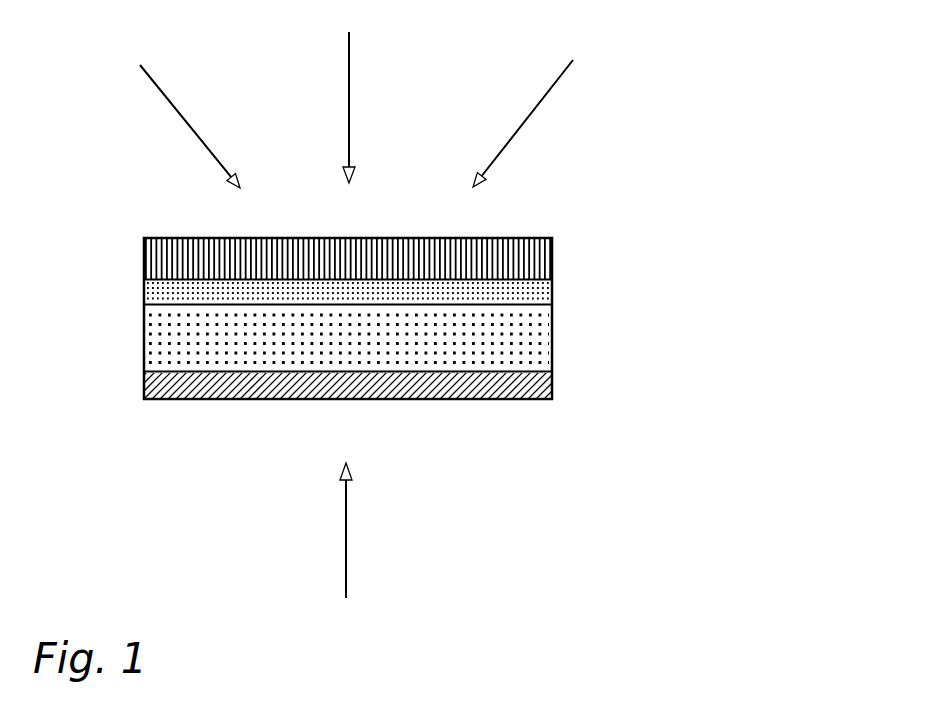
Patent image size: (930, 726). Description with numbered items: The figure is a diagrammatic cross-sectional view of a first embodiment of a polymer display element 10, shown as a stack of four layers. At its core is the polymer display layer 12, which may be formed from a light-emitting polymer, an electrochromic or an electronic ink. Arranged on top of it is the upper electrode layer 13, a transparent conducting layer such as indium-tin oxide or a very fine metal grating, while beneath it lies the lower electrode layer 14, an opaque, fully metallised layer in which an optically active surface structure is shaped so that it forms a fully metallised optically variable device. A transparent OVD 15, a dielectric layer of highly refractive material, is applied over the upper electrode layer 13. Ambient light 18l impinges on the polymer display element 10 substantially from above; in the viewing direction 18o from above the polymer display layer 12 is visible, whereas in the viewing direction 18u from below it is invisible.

The polymer display element 10 is at (669, 318).
The polymer display layer 12 is at (541, 347).
The upper electrode layer 13 is at (552, 294).
The lower electrode layer 14 is at (544, 392).
The transparent OVD 15 is at (543, 261).
The ambient light 18l is at (168, 100).
The viewing direction from above 18o is at (352, 100).
The viewing direction from below 18u is at (349, 520).